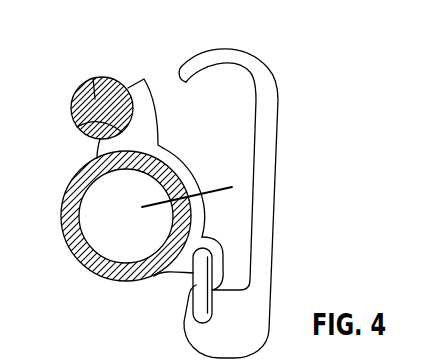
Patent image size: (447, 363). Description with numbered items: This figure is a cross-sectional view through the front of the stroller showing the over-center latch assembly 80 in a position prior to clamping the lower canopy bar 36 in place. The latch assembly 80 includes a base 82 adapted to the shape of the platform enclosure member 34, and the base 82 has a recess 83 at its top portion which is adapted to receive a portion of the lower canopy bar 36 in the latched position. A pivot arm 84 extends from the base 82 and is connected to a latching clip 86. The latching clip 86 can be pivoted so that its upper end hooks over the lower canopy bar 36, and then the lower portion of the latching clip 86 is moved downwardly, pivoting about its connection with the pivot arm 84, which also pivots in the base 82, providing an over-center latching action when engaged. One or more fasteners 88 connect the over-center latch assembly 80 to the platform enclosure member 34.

The platform enclosure member 34 is at (82, 262).
The lower canopy bar 36 is at (93, 80).
The over-center latch assembly 80 is at (153, 72).
The base 82 is at (177, 153).
The recess 83 is at (77, 127).
The pivot arm 84 is at (193, 285).
The latching clip 86 is at (277, 107).
The fastener 88 is at (207, 184).